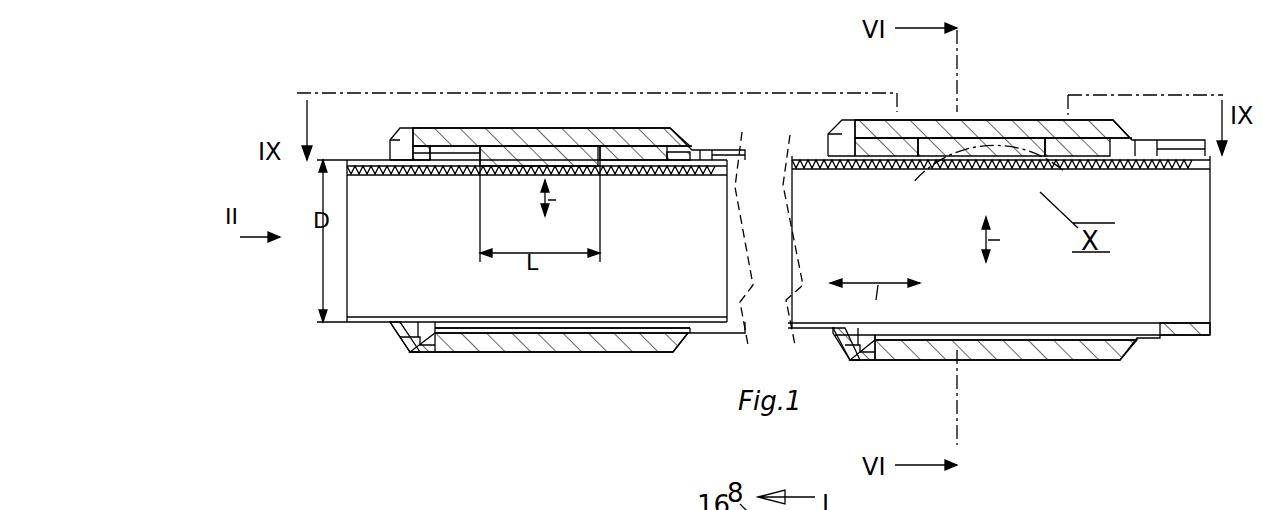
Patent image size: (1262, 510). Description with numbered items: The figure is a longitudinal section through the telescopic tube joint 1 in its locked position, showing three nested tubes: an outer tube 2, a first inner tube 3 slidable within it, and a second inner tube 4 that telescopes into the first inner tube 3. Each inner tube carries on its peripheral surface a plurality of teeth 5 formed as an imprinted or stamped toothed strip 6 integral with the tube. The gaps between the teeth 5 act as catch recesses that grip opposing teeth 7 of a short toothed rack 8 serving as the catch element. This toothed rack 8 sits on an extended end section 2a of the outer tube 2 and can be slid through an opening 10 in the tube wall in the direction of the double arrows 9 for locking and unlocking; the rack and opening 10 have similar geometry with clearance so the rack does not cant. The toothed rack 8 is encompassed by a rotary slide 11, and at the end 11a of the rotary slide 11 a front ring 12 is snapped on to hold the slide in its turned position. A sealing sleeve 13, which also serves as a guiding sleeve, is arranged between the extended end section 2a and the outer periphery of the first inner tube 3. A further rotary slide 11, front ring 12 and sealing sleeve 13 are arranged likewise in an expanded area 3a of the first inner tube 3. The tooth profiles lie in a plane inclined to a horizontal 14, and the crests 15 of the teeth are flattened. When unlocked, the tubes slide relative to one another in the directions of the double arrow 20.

The telescopic tube joint 1 is at (628, 386).
The outer tube 2 is at (1178, 337).
The extended end section 2a is at (1015, 362).
The first inner tube 3 is at (1205, 338).
The expanded area 3a is at (547, 345).
The second inner tube 4 is at (370, 324).
The teeth 5 is at (464, 177).
The toothed strip 6 is at (675, 176).
The opposing teeth 7 is at (513, 177).
The toothed rack 8 is at (587, 147).
The double arrows 9 is at (781, 221).
The opening 10 is at (540, 150).
The rotary slide 11 is at (650, 130).
The end of the rotary slide 11a is at (465, 345).
The front ring 12 is at (401, 146).
The sealing sleeve 13 is at (503, 325).
The horizontal 14 is at (410, 177).
The tooth crests 15 is at (352, 166).
The double arrow 20 is at (875, 301).